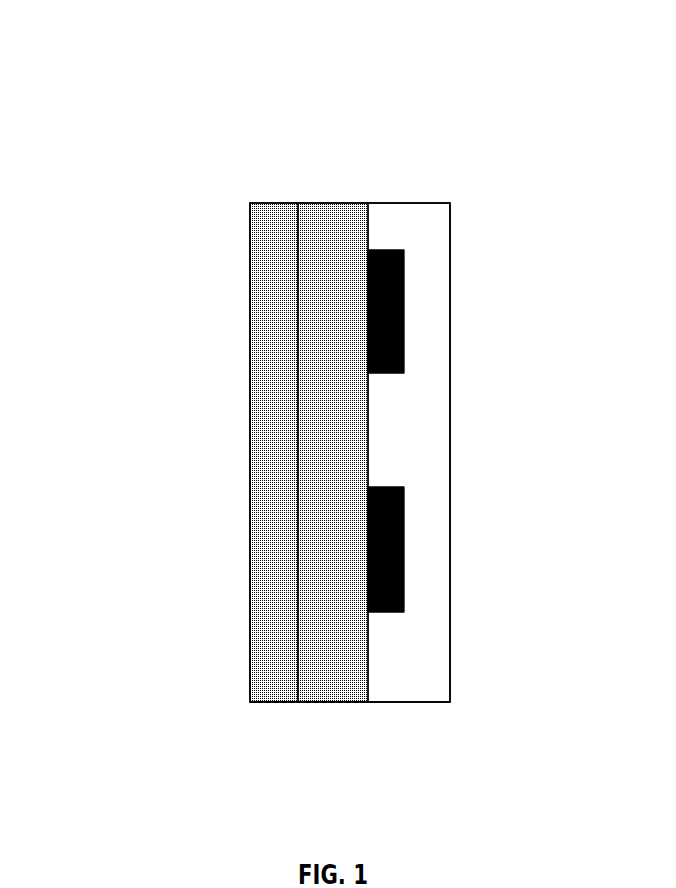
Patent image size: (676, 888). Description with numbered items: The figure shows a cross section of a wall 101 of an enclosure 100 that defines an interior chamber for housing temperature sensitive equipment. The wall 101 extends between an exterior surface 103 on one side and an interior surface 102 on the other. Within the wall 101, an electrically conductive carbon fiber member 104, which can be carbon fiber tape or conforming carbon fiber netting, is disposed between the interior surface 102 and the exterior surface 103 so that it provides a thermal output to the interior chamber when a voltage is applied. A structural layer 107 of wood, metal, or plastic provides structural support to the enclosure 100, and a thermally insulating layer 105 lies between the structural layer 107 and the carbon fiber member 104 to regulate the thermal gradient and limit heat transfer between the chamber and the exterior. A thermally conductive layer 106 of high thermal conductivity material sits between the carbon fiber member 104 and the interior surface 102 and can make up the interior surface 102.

The enclosure 100 is at (90, 48).
The wall 101 is at (346, 730).
The interior surface 102 is at (450, 608).
The exterior surface 103 is at (250, 647).
The electrically conductive carbon fiber member 104 is at (404, 352).
The thermally insulating layer 105 is at (305, 291).
The thermally conductive layer 106 is at (437, 268).
The structural layer 107 is at (262, 497).